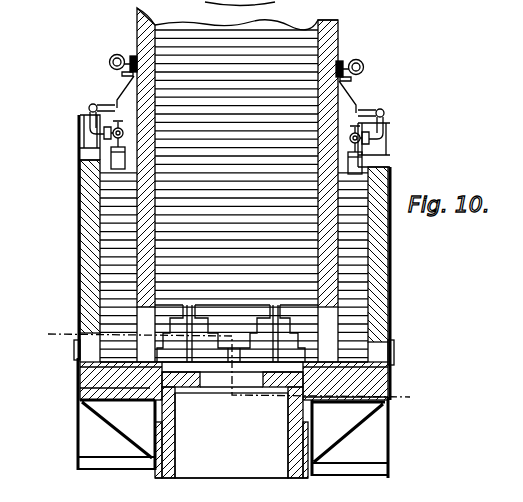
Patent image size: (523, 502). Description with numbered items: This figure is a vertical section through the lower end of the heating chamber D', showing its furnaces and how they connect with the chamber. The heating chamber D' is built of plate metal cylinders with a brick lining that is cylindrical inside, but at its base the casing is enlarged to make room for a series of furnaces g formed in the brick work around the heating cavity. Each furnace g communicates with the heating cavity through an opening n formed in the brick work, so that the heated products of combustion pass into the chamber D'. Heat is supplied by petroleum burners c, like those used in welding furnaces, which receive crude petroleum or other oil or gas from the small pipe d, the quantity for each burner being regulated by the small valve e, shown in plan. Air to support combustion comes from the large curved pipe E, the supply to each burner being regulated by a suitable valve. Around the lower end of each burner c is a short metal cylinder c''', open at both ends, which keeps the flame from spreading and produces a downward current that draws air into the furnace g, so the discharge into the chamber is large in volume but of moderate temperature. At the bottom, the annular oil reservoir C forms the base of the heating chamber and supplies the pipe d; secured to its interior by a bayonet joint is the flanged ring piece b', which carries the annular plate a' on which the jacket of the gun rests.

The curved air pipe E is at (234, 74).
The oil supply pipe d is at (89, 108).
The small valve e is at (236, 136).
The petroleum burner c is at (219, 141).
The short metal cylinder c''' is at (238, 169).
The heating chamber D' is at (210, 204).
The furnace g is at (234, 265).
The opening n is at (232, 333).
The annular plate a' is at (232, 392).
The flanged ring piece b' is at (231, 432).
The oil reservoir C is at (233, 418).